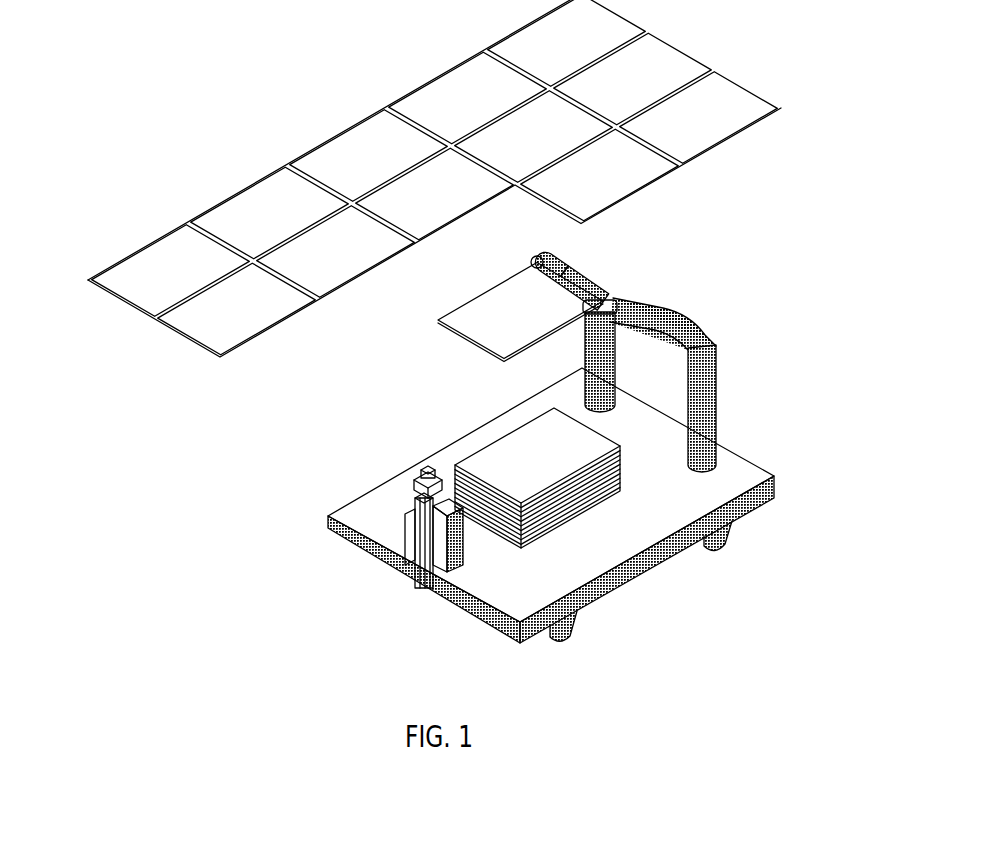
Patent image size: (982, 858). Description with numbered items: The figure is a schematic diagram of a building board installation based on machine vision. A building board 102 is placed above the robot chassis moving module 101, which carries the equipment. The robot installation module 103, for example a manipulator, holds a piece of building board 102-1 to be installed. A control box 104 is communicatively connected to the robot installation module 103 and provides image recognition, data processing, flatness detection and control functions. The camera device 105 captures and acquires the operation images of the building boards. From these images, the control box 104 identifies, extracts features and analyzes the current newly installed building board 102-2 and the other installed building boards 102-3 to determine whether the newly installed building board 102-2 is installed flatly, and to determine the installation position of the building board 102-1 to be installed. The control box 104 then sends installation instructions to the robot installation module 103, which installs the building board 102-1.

The robot chassis moving module 101 is at (665, 512).
The building board 102 is at (510, 463).
The building board to be installed 102-1 is at (510, 330).
The current newly installed building board 102-2 is at (145, 280).
The other installed building boards 102-3 is at (595, 195).
The robot installation module 103 is at (645, 320).
The control box 104 is at (450, 560).
The camera device 105 is at (422, 490).